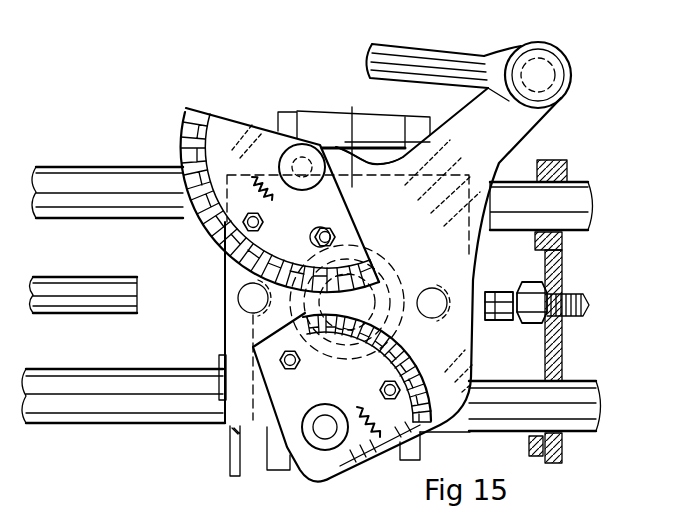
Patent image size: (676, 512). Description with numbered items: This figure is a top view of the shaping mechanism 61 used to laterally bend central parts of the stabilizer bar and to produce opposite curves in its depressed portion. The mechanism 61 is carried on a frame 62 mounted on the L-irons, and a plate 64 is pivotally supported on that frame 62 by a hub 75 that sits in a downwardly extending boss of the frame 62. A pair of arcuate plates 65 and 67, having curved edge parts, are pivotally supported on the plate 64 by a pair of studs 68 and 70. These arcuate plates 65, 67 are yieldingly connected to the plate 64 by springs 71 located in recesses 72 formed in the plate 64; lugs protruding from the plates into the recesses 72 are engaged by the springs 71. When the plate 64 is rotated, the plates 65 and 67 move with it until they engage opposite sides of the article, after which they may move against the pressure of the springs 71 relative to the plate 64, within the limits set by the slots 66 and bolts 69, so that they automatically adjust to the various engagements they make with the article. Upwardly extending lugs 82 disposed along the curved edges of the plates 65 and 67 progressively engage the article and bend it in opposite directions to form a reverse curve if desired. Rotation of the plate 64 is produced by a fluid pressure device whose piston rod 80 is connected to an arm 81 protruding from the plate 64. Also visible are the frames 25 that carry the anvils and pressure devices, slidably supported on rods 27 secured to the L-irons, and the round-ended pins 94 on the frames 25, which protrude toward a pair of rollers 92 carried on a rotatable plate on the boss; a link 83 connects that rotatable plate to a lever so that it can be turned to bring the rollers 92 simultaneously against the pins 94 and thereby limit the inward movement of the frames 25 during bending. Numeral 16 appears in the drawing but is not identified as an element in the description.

The plate 16 is at (345, 393).
The frame 25 is at (560, 277).
The rod 27 is at (559, 215).
The shaping mechanism 61 is at (390, 264).
The frame 62 is at (374, 160).
The plate 64 is at (358, 139).
The arcuate plate 65 is at (230, 133).
The slot 66 is at (338, 232).
The arcuate plate 67 is at (357, 425).
The stud 68 is at (303, 166).
The bolt 69 is at (251, 216).
The stud 70 is at (325, 432).
The spring 71 is at (281, 150).
The recess 72 is at (268, 168).
The hub 75 is at (358, 290).
The piston rod 80 is at (418, 67).
The arm 81 is at (516, 128).
The lug 82 is at (208, 247).
The link 83 is at (230, 446).
The roller 92 is at (237, 299).
The round-ended pin 94 is at (87, 296).